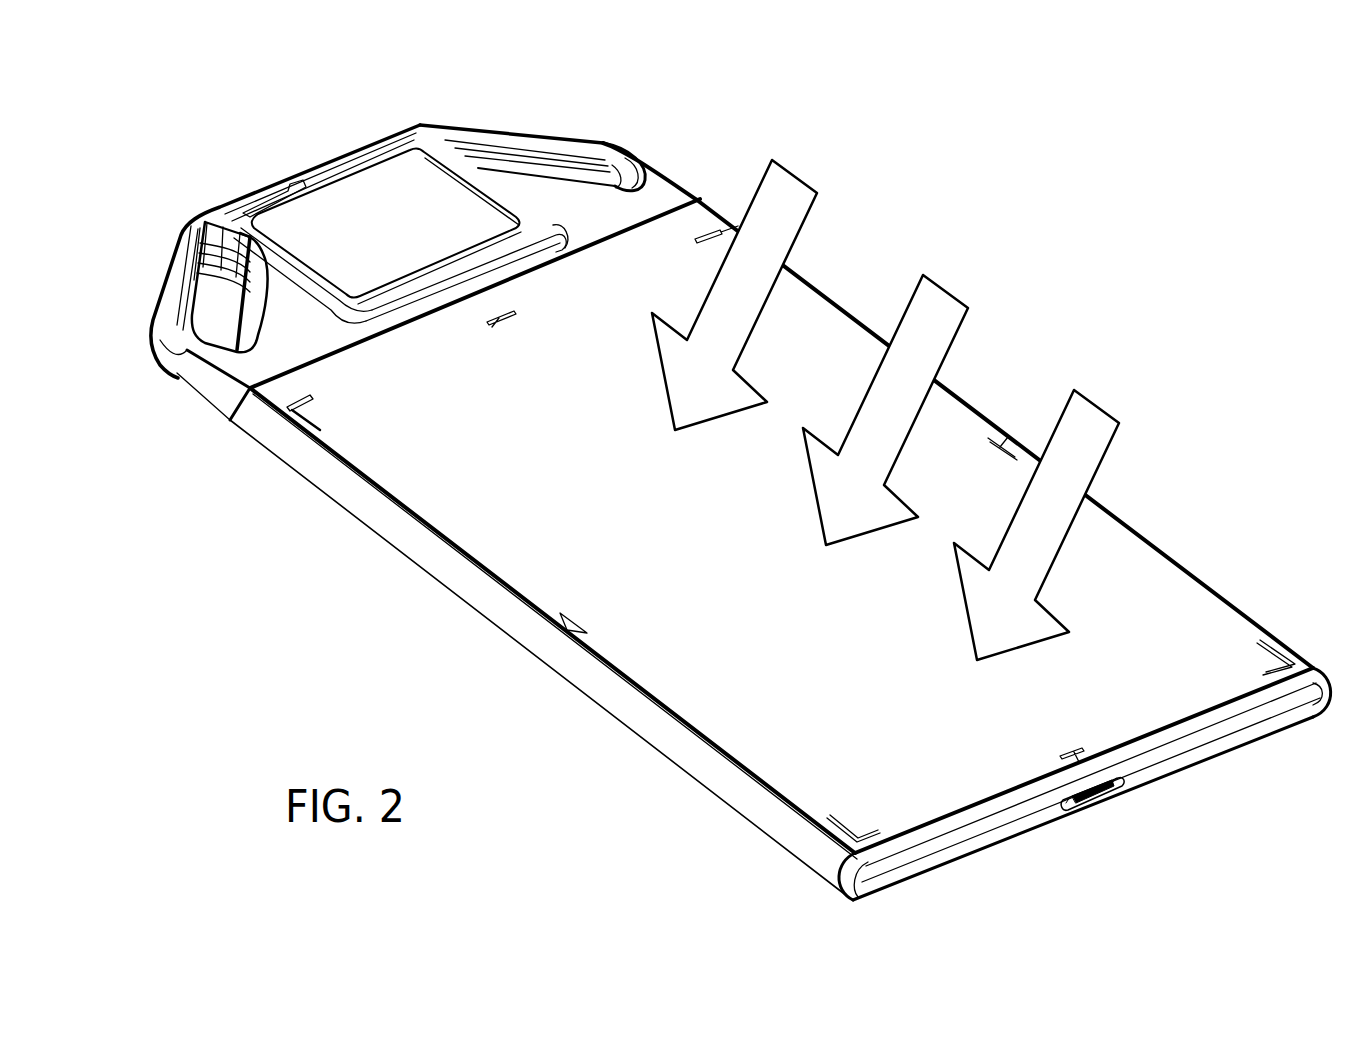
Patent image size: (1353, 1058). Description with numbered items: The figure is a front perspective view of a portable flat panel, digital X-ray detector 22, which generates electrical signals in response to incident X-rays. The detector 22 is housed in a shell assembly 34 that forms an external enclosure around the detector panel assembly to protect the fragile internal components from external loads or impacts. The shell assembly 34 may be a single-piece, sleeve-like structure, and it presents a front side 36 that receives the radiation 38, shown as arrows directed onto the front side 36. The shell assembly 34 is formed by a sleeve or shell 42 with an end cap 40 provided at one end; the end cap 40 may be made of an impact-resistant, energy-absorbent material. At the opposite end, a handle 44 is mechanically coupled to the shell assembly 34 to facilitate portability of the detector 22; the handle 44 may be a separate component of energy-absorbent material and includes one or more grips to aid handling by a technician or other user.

The detector 22 is at (1112, 208).
The shell assembly 34 is at (592, 737).
The front side 36 is at (1148, 578).
The radiation 38 is at (962, 330).
The end cap 40 is at (967, 848).
The sleeve or shell 42 is at (400, 530).
The handle 44 is at (421, 127).